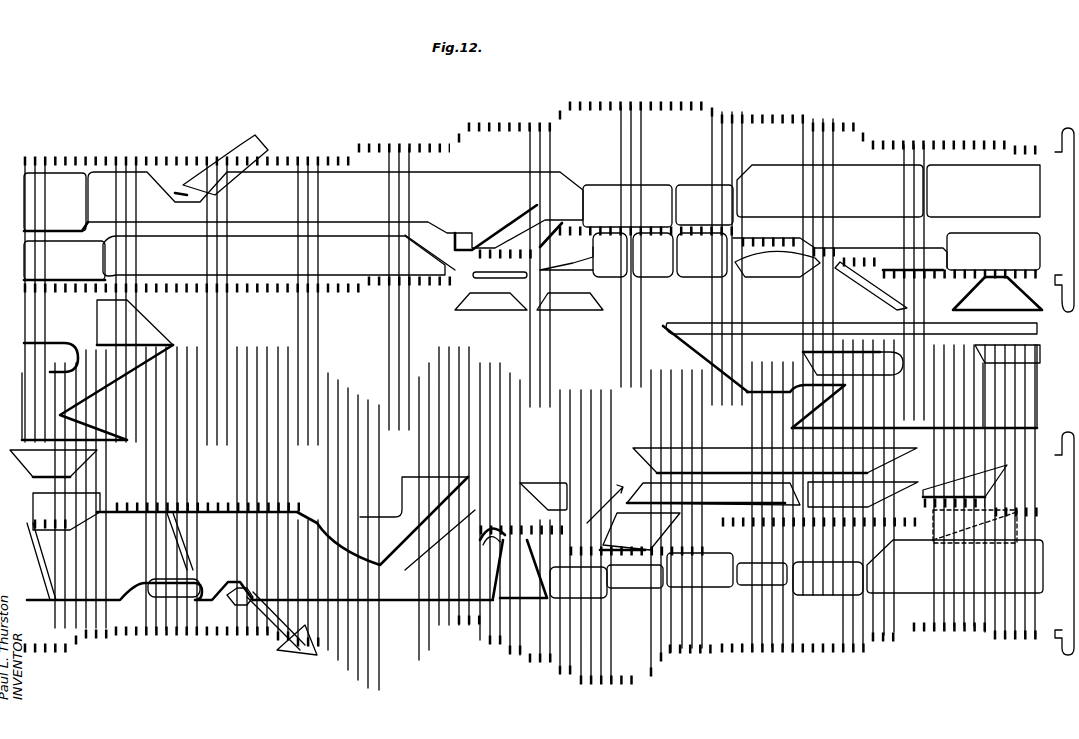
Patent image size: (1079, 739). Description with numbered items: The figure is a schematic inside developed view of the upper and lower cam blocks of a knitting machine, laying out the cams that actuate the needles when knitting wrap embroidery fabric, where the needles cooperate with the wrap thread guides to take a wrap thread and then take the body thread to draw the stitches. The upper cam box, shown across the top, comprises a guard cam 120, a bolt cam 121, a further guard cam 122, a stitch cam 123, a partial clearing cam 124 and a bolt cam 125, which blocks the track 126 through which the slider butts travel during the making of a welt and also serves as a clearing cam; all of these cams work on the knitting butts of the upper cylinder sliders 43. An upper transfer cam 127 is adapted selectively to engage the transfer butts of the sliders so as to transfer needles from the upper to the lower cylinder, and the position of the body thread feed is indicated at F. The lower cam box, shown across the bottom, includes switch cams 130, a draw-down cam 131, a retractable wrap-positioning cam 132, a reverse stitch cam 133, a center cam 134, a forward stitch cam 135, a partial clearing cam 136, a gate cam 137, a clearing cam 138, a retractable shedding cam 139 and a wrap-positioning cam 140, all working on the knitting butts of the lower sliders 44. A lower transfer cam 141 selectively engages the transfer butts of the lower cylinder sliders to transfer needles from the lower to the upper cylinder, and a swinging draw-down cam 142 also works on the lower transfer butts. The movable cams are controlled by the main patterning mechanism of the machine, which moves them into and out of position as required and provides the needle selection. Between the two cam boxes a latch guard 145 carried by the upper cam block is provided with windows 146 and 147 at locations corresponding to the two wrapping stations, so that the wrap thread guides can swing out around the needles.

The upper cylinder sliders 43 is at (1066, 212).
The lower sliders 44 is at (1060, 650).
The guard cam 120 is at (997, 293).
The bolt cam 121 is at (882, 292).
The guard cam 122 is at (778, 268).
The stitch cam 123 is at (700, 273).
The partial clearing cam 124 is at (562, 232).
The bolt cam 125 is at (455, 232).
The track 126 is at (238, 236).
The upper transfer cam 127 is at (237, 140).
The switch cams 130 is at (1010, 483).
The draw-down cam 131 is at (897, 473).
The retractable wrap-positioning cam 132 is at (955, 551).
The reverse stitch cam 133 is at (700, 570).
The center cam 134 is at (713, 494).
The forward stitch cam 135 is at (640, 531).
The partial clearing cam 136 is at (567, 483).
The gate cam 137 is at (485, 545).
The clearing cam 138 is at (480, 540).
The retractable shedding cam 139 is at (400, 490).
The wrap-positioning cam 140 is at (55, 490).
The lower transfer cam 141 is at (270, 610).
The swinging draw-down cam 142 is at (160, 607).
The latch guard 145 is at (1027, 396).
The window 146 is at (833, 355).
The window 147 is at (55, 338).
The body thread feed position F is at (728, 382).